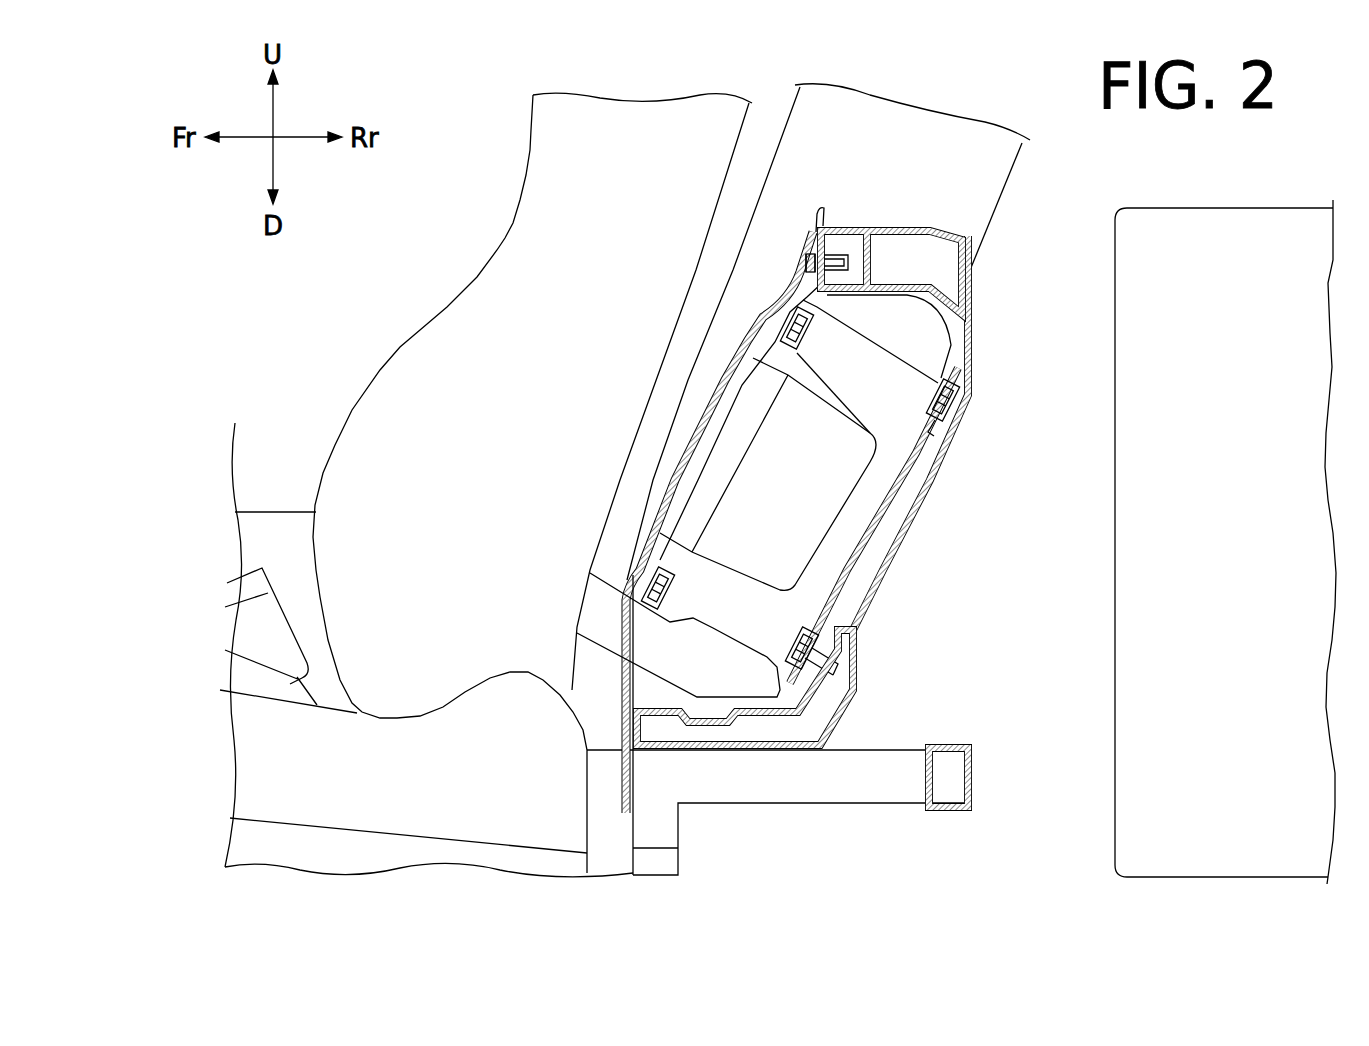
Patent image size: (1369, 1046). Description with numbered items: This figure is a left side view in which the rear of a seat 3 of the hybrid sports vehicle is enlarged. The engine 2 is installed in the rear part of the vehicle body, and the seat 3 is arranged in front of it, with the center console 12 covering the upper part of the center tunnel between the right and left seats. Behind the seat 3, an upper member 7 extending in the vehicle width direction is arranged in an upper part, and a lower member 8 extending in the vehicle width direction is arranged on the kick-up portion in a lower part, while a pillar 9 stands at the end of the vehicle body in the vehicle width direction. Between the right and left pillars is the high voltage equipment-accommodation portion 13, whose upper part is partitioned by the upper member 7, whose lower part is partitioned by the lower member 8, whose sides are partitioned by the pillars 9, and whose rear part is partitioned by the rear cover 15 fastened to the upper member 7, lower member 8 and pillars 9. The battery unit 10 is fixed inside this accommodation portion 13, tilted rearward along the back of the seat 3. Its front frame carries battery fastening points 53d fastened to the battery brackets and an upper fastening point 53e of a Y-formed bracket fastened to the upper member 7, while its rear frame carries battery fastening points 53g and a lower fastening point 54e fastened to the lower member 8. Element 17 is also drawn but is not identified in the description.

The engine 2 is at (1223, 208).
The seat 3 is at (437, 365).
The upper member 7 is at (900, 227).
The lower member 8 is at (837, 720).
The pillar 9 is at (865, 130).
The battery unit 10 is at (918, 452).
The center console 12 is at (277, 512).
The high voltage equipment-accommodation portion 13 is at (922, 506).
The rear cover 15 is at (877, 593).
The weatherstrip 17 is at (717, 395).
The battery fastening point 53d is at (782, 330).
The upper fastening point 53e is at (792, 258).
The battery fastening point 53g is at (945, 362).
The lower fastening point 54e is at (827, 643).